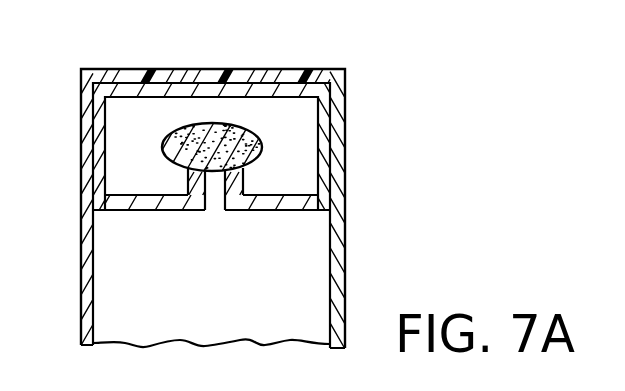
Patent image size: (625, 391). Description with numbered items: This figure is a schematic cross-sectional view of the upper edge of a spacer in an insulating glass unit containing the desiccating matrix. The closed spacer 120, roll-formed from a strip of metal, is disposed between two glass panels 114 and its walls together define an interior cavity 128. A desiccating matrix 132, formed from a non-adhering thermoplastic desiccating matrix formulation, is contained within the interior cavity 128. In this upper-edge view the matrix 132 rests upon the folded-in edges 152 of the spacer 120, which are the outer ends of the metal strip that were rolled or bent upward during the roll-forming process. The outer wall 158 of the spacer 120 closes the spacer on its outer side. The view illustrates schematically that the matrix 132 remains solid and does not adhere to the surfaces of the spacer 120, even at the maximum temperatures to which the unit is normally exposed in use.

The glass panel 114 is at (346, 314).
The spacer 120 is at (167, 215).
The interior cavity 128 is at (133, 153).
The desiccating matrix 132 is at (262, 153).
The folded-in edges 152 is at (240, 183).
The outer wall 158 is at (207, 99).